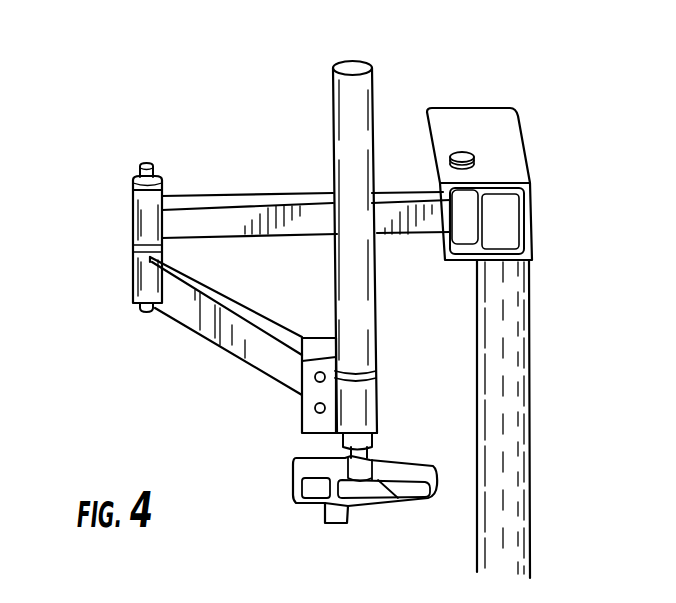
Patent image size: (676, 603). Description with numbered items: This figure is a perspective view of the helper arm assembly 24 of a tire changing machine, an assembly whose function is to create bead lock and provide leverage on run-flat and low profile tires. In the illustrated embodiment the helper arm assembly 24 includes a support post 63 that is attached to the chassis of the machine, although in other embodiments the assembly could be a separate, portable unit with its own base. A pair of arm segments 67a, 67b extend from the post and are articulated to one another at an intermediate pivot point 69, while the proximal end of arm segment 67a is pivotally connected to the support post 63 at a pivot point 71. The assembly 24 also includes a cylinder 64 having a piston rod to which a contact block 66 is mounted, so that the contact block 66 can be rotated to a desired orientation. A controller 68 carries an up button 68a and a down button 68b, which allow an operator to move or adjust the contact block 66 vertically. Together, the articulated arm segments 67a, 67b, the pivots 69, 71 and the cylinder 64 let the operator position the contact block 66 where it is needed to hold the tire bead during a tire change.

The helper arm assembly 24 is at (110, 427).
The support post 63 is at (530, 428).
The cylinder 64 is at (372, 92).
The contact block 66 is at (331, 527).
The arm segment 67a is at (245, 208).
The arm segment 67b is at (193, 317).
The controller 68 is at (302, 432).
The up button 68a is at (302, 377).
The down button 68b is at (302, 410).
The intermediate pivot point 69 is at (150, 167).
The pivot point 71 is at (467, 150).